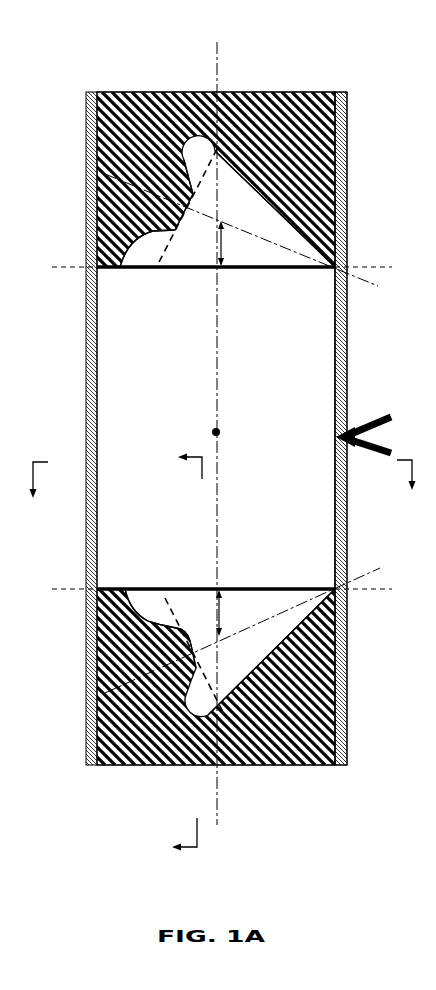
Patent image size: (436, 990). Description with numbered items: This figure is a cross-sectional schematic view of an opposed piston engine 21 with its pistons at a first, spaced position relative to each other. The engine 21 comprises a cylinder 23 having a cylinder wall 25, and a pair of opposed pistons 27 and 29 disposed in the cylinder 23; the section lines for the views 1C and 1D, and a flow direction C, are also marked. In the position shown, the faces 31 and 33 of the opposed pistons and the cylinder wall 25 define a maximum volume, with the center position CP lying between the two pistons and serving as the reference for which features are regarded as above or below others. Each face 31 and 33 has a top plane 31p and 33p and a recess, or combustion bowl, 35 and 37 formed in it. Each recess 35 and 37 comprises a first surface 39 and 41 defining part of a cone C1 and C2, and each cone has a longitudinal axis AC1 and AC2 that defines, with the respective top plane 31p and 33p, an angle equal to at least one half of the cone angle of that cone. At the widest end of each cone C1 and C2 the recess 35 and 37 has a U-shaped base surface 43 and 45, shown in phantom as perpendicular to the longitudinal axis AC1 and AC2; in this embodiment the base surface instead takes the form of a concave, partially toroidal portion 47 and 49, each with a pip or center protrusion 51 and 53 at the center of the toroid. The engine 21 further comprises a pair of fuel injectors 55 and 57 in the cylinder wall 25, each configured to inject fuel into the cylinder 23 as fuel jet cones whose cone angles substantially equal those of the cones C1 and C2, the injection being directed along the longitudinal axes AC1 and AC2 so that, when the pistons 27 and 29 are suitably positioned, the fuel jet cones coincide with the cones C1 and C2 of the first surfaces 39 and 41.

The opposed piston engine 21 is at (114, 63).
The cylinder 23 is at (352, 146).
The cylinder wall 25 is at (333, 347).
The piston 27 is at (277, 91).
The piston 29 is at (263, 767).
The face 31 is at (115, 268).
The face 33 is at (117, 588).
The recess 35 is at (227, 214).
The recess 37 is at (233, 669).
The first surface 39 is at (293, 228).
The first surface 41 is at (293, 625).
The base surface 43 is at (192, 203).
The base surface 45 is at (164, 615).
The toroidal portion 47 is at (152, 233).
The toroidal portion 49 is at (138, 612).
The center protrusion 51 is at (181, 233).
The center protrusion 53 is at (190, 638).
The fuel injector 55 is at (368, 453).
The fuel injector 57 is at (363, 422).
The flow direction C is at (385, 438).
The cone C1 is at (253, 247).
The cone C2 is at (253, 610).
The center position CP is at (212, 431).
The longitudinal axis AC1 is at (362, 283).
The longitudinal axis AC2 is at (355, 573).
The top plane 31p is at (392, 262).
The top plane 33p is at (392, 592).
The section line 1C is at (171, 656).
The section line 1D is at (230, 494).